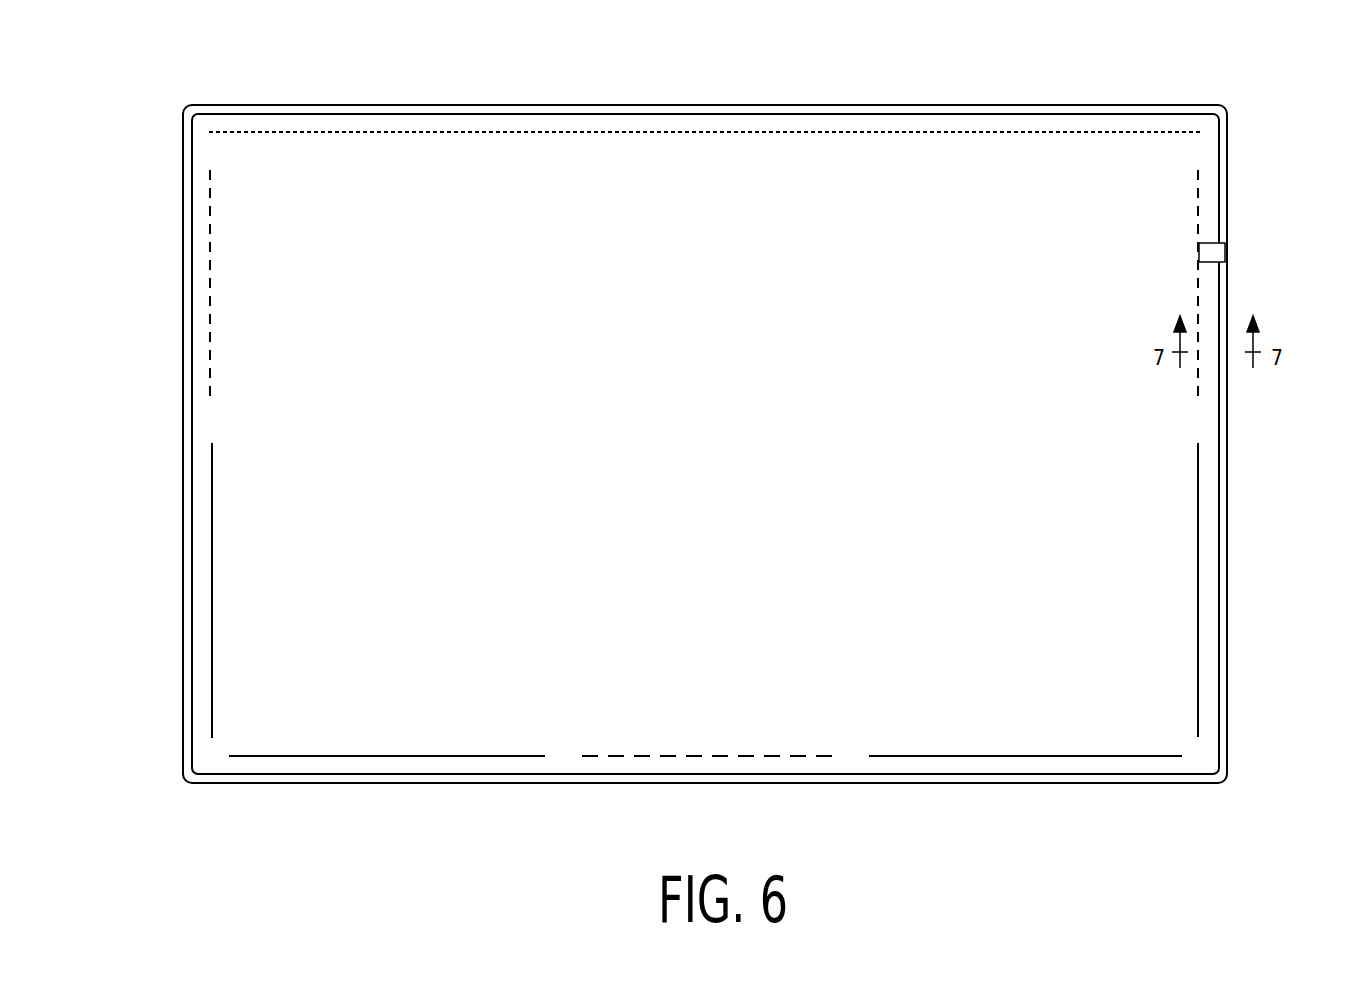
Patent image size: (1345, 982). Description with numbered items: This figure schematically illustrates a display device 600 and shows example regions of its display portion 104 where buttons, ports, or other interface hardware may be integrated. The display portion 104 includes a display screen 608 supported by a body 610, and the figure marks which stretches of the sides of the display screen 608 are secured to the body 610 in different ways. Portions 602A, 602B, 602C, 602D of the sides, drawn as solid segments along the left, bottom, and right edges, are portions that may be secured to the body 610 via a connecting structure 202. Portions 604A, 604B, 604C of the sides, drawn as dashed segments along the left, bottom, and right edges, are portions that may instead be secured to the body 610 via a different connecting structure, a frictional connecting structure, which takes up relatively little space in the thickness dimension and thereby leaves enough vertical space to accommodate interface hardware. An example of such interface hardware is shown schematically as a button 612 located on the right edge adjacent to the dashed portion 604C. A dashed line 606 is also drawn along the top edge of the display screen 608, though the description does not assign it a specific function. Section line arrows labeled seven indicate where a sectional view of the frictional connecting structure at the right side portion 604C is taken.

The display device 600 is at (1042, 40).
The display portion 104 is at (913, 104).
The connecting structure 202 is at (1227, 104).
The body 610 is at (230, 104).
The top dashed edge region 606 is at (630, 132).
The portion of the side 604A is at (210, 243).
The portion of the side 604B is at (730, 757).
The portion of the side 604C is at (1198, 200).
The portion of the side 602A is at (212, 570).
The portion of the side 602B is at (392, 757).
The portion of the side 602C is at (1050, 757).
The portion of the side 602D is at (1198, 518).
The display screen 608 is at (738, 381).
The button 612 is at (1225, 252).